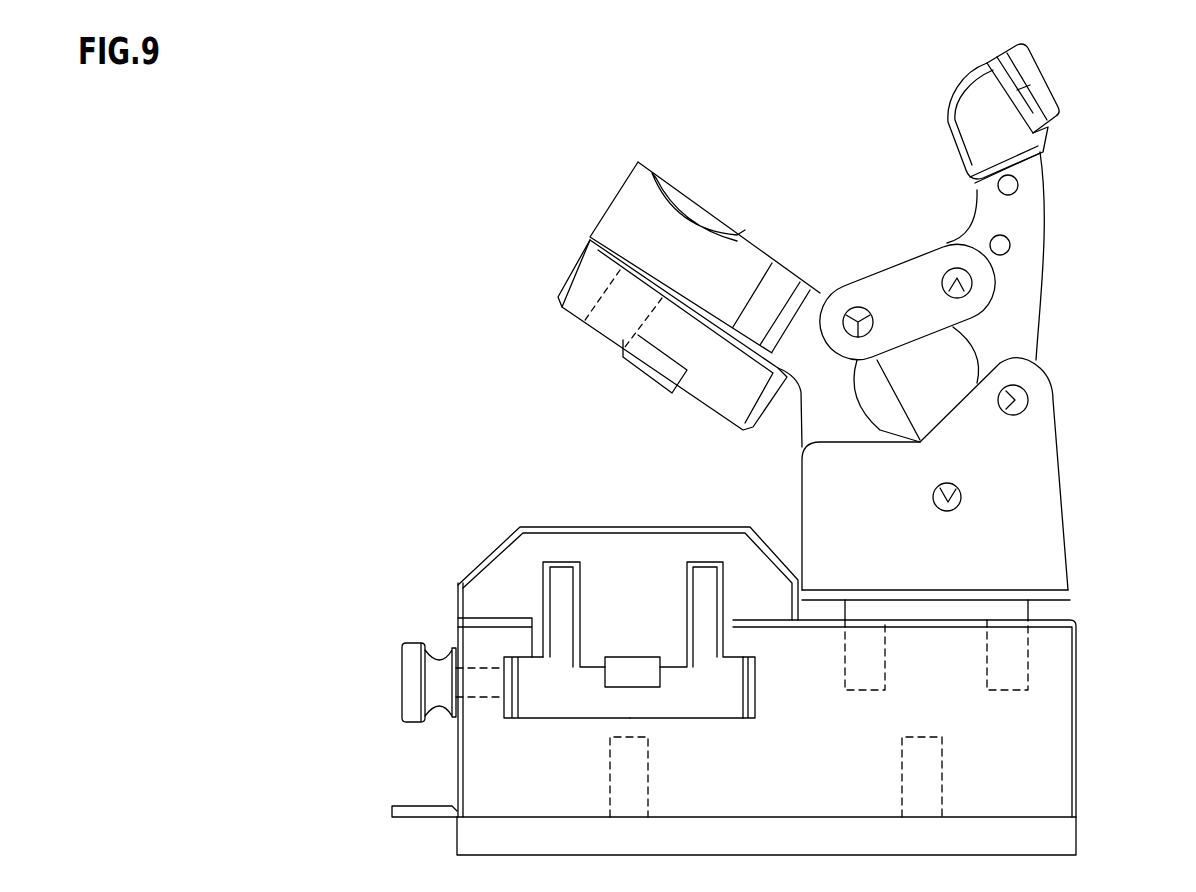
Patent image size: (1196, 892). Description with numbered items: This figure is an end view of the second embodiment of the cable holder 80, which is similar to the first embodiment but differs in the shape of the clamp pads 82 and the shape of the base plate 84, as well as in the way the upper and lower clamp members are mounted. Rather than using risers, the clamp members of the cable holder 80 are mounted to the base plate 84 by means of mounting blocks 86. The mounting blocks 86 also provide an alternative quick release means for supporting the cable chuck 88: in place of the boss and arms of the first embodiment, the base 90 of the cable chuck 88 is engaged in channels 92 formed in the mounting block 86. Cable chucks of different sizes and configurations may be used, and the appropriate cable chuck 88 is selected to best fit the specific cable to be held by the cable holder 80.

The cable holder 80 is at (1062, 315).
The clamp pads 82 is at (568, 282).
The base plate 84 is at (1070, 842).
The mounting blocks 86 is at (1031, 777).
The cable chuck 88 is at (578, 704).
The base 90 is at (686, 640).
The channels 92 is at (762, 693).